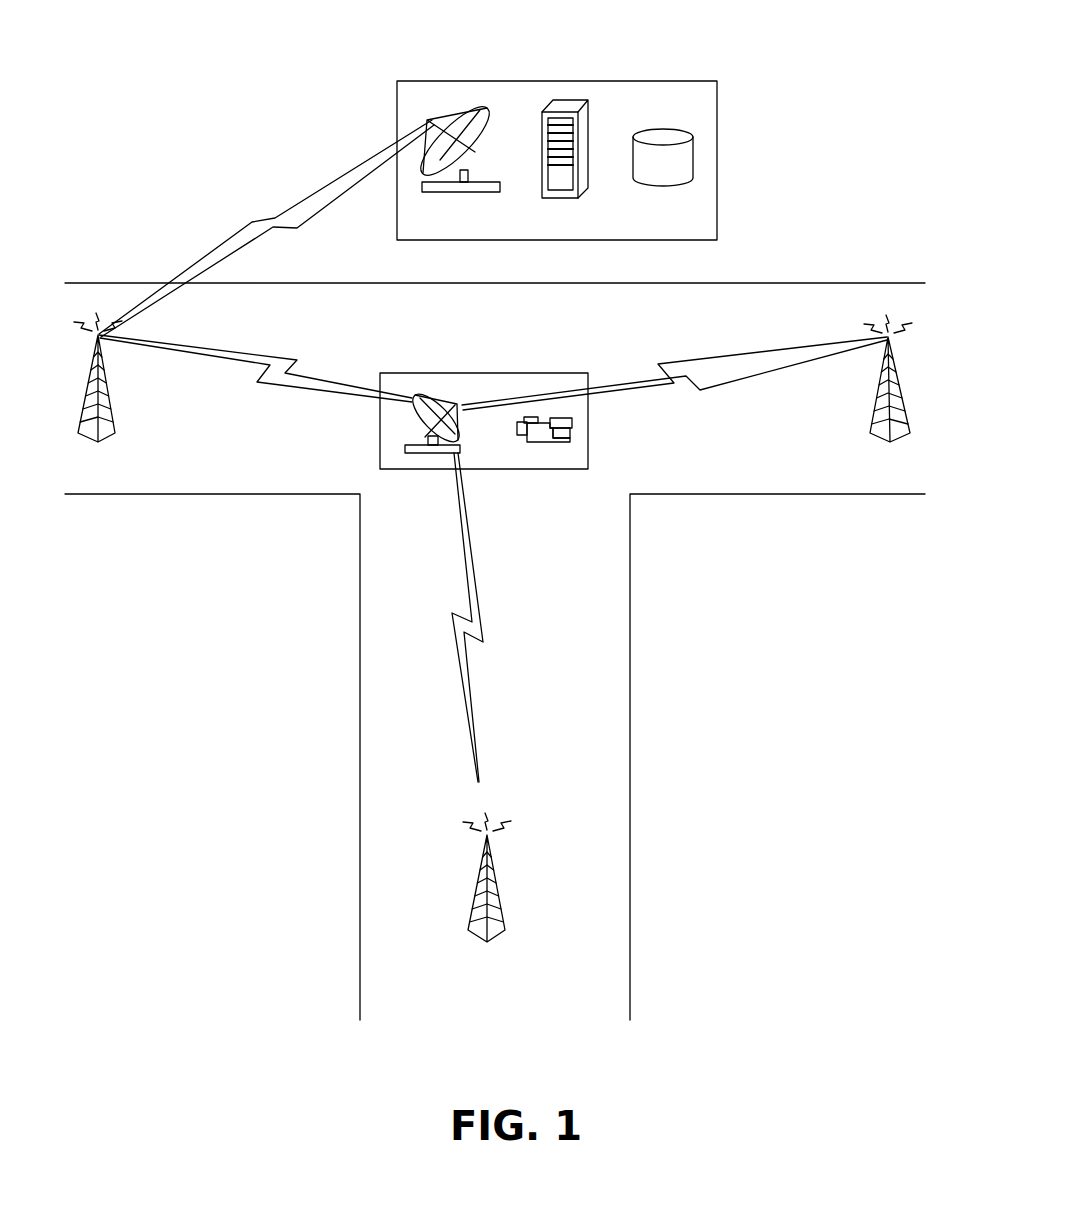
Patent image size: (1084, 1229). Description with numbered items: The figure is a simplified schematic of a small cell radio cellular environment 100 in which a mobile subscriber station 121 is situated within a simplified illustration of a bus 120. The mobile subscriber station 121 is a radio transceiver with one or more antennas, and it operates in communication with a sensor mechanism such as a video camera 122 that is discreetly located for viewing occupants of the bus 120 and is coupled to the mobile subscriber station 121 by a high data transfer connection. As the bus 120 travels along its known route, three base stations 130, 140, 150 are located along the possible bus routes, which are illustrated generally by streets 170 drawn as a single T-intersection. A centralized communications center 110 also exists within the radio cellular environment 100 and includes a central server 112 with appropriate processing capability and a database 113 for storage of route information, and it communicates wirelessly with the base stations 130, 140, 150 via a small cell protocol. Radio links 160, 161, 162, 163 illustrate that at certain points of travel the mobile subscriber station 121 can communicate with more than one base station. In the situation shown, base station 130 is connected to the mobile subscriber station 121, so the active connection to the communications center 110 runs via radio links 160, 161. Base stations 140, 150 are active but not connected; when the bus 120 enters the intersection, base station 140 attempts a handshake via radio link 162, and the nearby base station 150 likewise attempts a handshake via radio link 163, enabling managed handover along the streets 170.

The radio cellular environment 100 is at (235, 650).
The centralized communications center 110 is at (693, 81).
The central server 112 is at (592, 120).
The database 113 is at (693, 158).
The bus 120 is at (488, 373).
The mobile subscriber station 121 is at (420, 423).
The video camera 122 is at (572, 440).
The base station 130 is at (116, 432).
The base station 140 is at (500, 893).
The base station 150 is at (876, 392).
The radio link 160 is at (487, 112).
The radio link 161 is at (200, 353).
The radio link 162 is at (468, 675).
The radio link 163 is at (688, 362).
The streets 170 is at (788, 494).